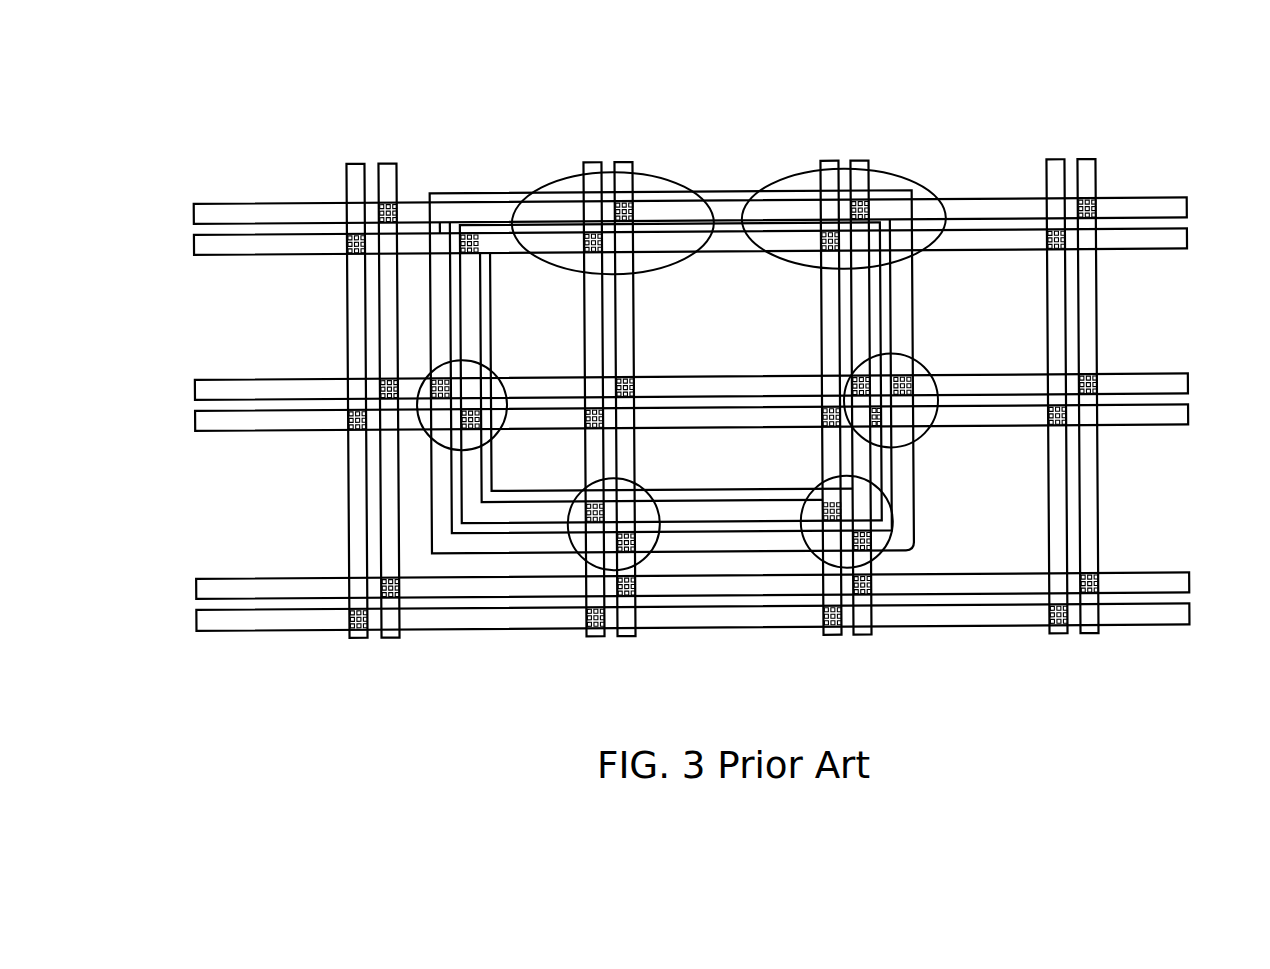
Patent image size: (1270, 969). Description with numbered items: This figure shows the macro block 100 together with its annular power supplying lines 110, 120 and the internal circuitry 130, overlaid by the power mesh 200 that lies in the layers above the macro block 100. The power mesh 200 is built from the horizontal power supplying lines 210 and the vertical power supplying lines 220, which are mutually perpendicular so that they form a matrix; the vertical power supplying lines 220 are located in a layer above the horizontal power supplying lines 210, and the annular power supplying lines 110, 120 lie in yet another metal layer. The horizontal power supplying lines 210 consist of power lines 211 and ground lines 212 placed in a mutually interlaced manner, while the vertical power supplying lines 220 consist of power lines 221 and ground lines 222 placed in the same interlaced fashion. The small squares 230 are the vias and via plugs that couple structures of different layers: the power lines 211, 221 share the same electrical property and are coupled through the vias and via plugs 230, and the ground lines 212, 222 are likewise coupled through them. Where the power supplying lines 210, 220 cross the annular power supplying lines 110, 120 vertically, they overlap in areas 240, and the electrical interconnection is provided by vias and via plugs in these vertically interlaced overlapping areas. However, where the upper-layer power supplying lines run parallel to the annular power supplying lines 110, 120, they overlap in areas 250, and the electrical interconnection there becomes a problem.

The macro block 100 is at (914, 195).
The annular power supplying line 110 is at (910, 300).
The annular power supplying line 120 is at (730, 512).
The internal circuitry 130 is at (722, 355).
The power mesh 200 is at (1135, 192).
The horizontal power supplying lines 210 is at (187, 205).
The power line 211 is at (1166, 211).
The ground line 212 is at (1176, 248).
The vertical power supplying lines 220 is at (1087, 82).
The power line 221 is at (387, 180).
The ground line 222 is at (355, 182).
The vias and via plugs 230 is at (590, 256).
The vertically interlaced overlapping areas 240 is at (496, 388).
The parallel overlapping areas 250 is at (648, 276).